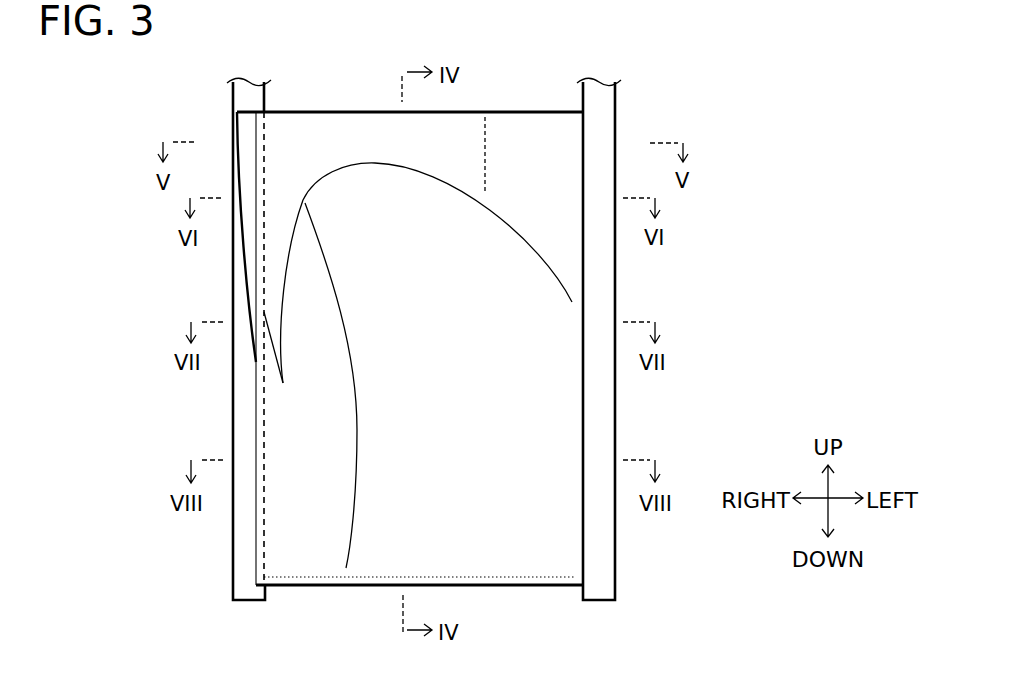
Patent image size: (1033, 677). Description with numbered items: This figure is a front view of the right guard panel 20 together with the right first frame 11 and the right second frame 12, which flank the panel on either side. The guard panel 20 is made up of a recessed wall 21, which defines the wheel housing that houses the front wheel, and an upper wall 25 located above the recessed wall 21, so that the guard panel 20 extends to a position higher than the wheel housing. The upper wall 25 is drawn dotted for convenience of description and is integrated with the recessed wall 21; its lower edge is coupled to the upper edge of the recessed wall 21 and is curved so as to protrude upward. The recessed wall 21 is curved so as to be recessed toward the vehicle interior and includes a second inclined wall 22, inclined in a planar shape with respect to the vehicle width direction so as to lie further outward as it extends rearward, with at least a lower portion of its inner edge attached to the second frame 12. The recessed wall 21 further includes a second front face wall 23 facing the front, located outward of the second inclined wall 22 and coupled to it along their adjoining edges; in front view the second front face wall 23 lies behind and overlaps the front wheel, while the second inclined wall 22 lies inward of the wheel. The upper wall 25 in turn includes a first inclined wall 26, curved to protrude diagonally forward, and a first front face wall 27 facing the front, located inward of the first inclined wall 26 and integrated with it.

The first frame 11 is at (233, 402).
The second frame 12 is at (615, 402).
The guard panel 20 is at (502, 111).
The recessed wall 21 is at (584, 513).
The second inclined wall 22 is at (426, 275).
The second front face wall 23 is at (326, 385).
The upper wall 25 is at (257, 148).
The first inclined wall 26 is at (342, 254).
The first front face wall 27 is at (520, 154).